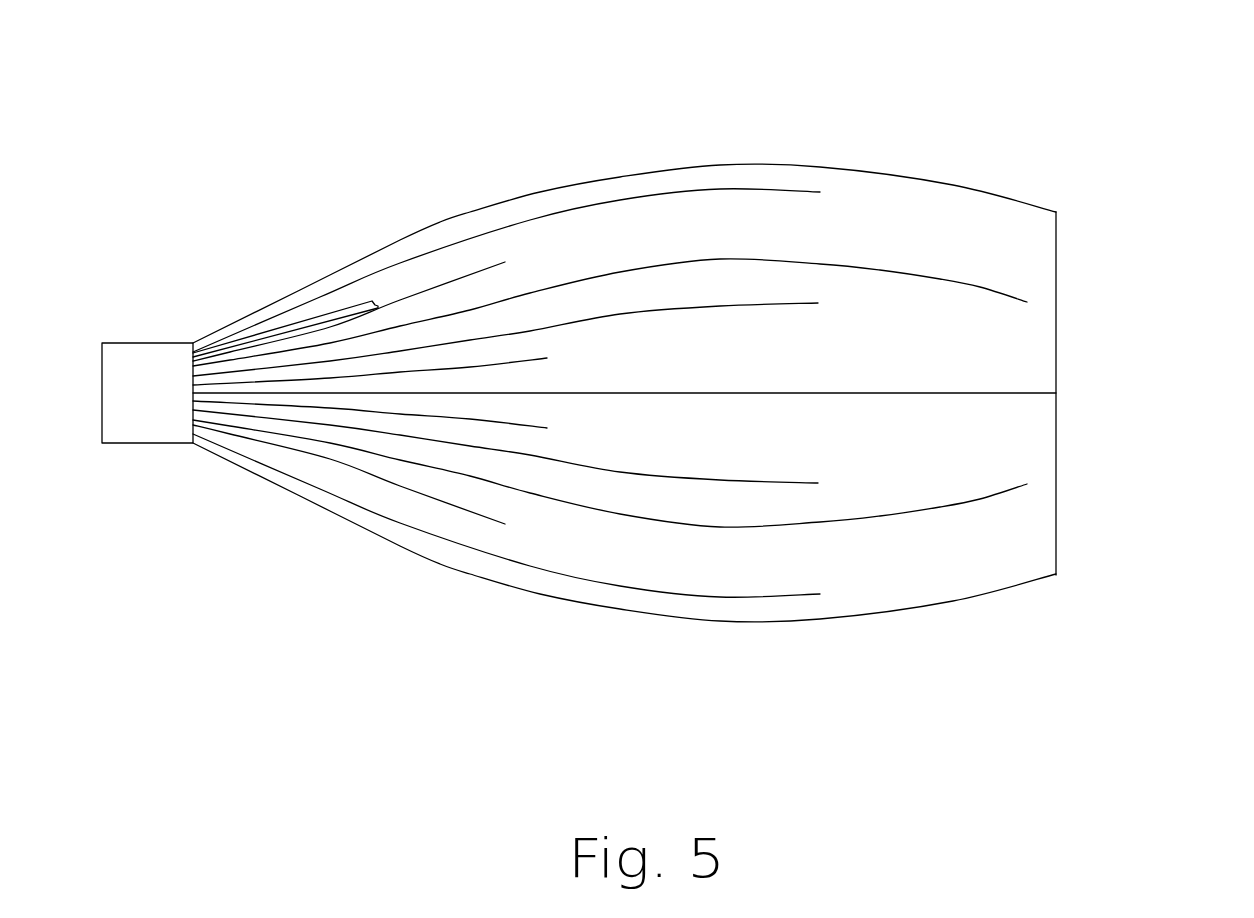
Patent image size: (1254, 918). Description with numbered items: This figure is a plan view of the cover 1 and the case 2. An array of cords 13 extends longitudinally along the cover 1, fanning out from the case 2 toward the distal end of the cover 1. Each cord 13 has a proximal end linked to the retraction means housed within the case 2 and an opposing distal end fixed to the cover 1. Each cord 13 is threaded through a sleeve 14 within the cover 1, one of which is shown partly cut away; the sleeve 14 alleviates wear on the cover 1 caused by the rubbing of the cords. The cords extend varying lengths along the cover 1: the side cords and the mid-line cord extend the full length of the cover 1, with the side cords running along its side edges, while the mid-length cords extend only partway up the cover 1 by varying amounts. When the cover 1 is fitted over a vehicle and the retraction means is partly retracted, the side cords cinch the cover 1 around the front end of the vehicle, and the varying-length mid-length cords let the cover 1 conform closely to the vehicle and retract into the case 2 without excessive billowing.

The light guide body 1 is at (954, 202).
The case 2 is at (147, 365).
The cords 13 is at (788, 192).
The sleeve 14 is at (344, 307).